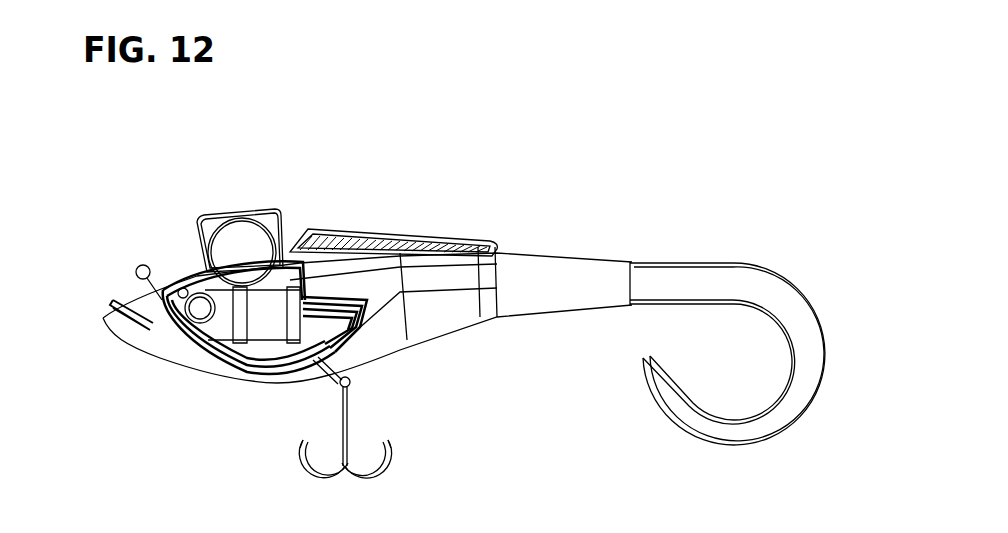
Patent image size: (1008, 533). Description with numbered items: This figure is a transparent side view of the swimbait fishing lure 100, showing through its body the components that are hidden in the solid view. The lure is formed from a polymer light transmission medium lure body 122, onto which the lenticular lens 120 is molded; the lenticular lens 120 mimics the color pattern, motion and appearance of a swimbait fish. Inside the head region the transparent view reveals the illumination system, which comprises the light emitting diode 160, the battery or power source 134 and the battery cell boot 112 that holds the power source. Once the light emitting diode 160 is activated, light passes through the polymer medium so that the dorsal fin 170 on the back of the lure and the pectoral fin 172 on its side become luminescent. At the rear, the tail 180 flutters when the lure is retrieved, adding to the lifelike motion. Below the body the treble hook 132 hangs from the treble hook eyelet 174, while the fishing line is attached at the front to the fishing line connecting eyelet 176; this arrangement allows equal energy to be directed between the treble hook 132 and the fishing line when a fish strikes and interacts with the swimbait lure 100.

The fishing lure 100 is at (545, 237).
The battery cell boot 112 is at (237, 214).
The lenticular lens 120 is at (403, 293).
The polymer light transmission medium lure body 122 is at (552, 290).
The treble hook 132 is at (307, 466).
The battery or power source 134 is at (242, 251).
The light emitting diode 160 is at (285, 302).
The dorsal fin 170 is at (416, 232).
The pectoral fin 172 is at (357, 324).
The treble hook eyelet 174 is at (343, 387).
The fishing line connecting eyelet 176 is at (140, 266).
The tail 180 is at (802, 340).